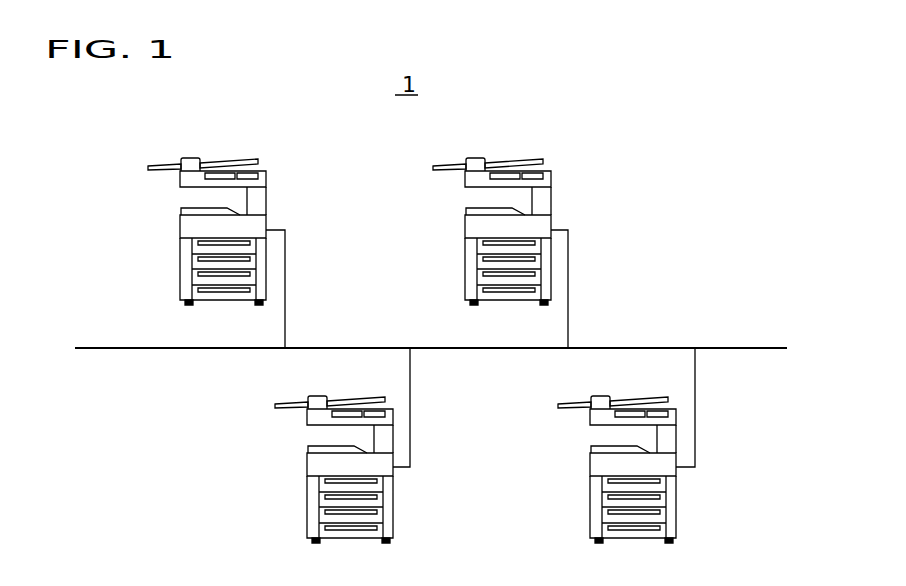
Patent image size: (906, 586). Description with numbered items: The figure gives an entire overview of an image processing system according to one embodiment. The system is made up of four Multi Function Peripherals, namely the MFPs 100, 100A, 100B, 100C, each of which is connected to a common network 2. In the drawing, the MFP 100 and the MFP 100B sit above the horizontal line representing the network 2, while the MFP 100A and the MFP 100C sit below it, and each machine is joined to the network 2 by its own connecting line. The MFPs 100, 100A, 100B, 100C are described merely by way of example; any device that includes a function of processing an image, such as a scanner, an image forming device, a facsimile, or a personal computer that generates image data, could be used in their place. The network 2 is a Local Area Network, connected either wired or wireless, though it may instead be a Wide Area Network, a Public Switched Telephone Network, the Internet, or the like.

The network 2 is at (654, 348).
The Multi Function Peripheral 100 is at (240, 158).
The Multi Function Peripheral 100A is at (393, 512).
The Multi Function Peripheral 100B is at (522, 158).
The Multi Function Peripheral 100C is at (676, 512).